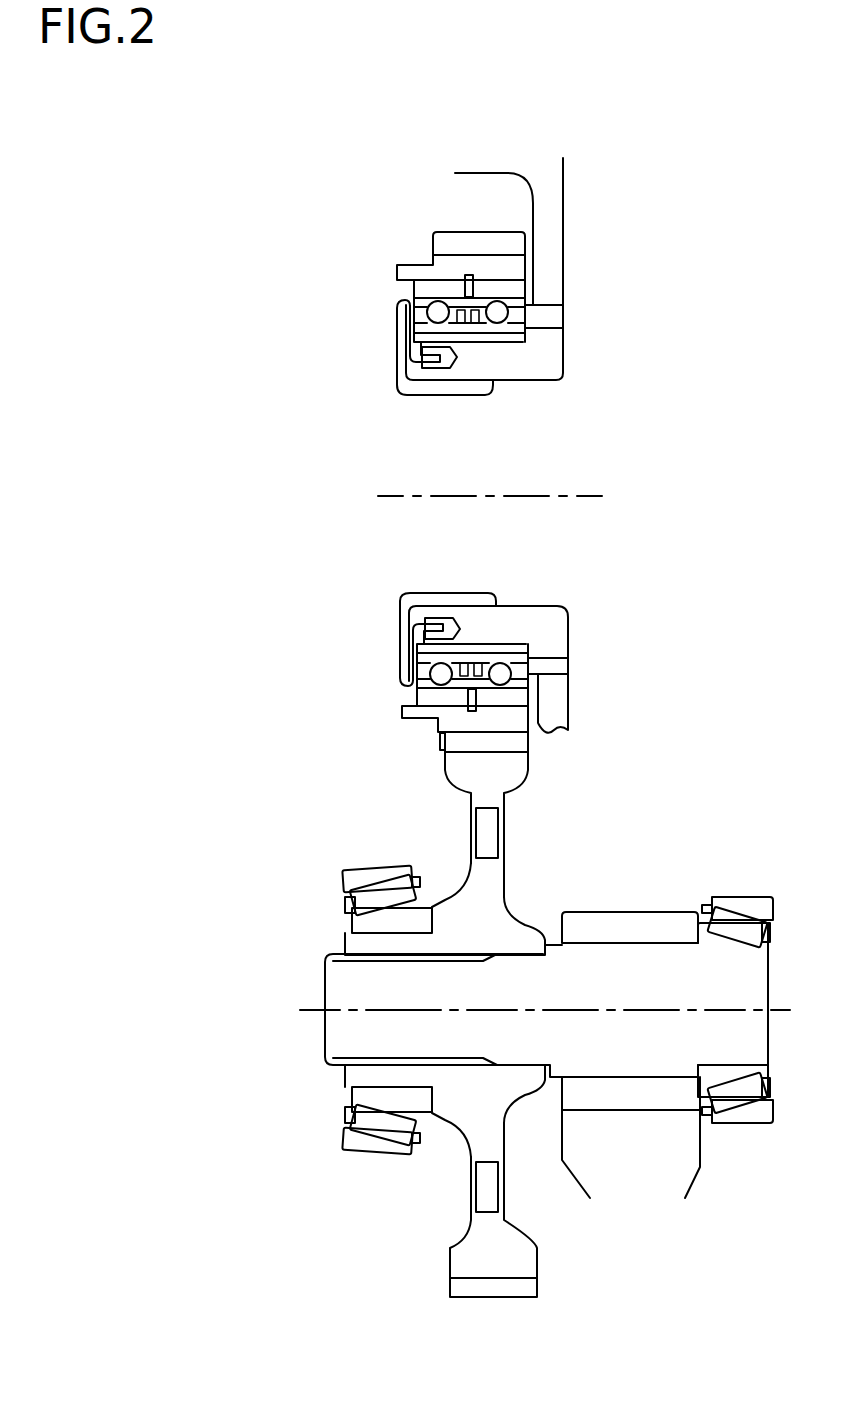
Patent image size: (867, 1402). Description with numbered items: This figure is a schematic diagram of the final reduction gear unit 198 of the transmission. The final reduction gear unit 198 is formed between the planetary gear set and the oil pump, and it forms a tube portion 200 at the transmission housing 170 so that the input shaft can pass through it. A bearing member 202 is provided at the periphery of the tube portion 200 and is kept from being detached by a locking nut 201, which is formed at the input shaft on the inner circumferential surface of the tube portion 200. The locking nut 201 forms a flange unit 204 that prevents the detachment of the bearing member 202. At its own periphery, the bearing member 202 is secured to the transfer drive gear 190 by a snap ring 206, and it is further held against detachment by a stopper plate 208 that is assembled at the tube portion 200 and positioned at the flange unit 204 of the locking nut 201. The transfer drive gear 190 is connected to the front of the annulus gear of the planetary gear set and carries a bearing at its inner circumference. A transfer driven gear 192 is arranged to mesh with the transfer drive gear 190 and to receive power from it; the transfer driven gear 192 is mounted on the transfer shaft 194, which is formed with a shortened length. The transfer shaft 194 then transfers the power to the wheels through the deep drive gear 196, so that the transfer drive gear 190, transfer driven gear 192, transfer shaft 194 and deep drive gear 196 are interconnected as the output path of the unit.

The transmission housing 170 is at (552, 181).
The transfer drive gear 190 is at (473, 258).
The transfer driven gear 192 is at (480, 872).
The transfer shaft 194 is at (607, 952).
The deep drive gear 196 is at (700, 1167).
The final reduction gear unit 198 is at (668, 566).
The tube portion 200 is at (515, 368).
The locking nut 201 is at (395, 401).
The bearing member 202 is at (500, 287).
The flange unit 204 is at (402, 636).
The snap ring 206 is at (463, 288).
The stopper plate 208 is at (400, 345).